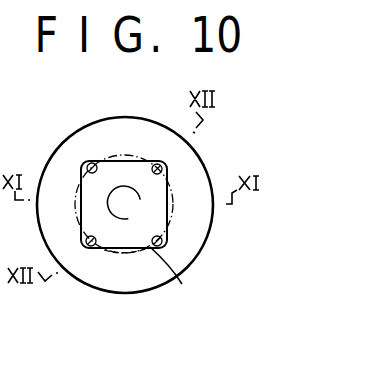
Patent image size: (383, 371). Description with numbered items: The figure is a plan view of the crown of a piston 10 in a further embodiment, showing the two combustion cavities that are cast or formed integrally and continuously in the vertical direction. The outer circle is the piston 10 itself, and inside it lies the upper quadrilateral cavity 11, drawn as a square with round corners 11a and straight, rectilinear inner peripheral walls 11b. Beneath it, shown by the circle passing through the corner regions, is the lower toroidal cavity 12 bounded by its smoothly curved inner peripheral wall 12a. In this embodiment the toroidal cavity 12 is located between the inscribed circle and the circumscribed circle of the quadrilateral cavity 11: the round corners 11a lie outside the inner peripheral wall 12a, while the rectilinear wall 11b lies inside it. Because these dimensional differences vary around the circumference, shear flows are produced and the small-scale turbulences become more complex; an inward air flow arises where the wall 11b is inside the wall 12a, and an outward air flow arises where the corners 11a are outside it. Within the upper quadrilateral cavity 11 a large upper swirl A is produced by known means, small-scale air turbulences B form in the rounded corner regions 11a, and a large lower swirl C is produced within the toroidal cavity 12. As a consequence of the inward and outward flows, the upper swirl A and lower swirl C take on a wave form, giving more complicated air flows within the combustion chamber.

The piston 10 is at (206, 222).
The upper quadrilateral cavity 11 is at (169, 192).
The round corners 11a is at (97, 251).
The inner peripheral wall 11b is at (181, 277).
The lower toroidal cavity 12 is at (128, 155).
The inner peripheral wall 12a is at (136, 252).
The upper large swirl A is at (121, 193).
The air turbulences of a small scale B is at (100, 166).
The lower large swirl C is at (88, 184).